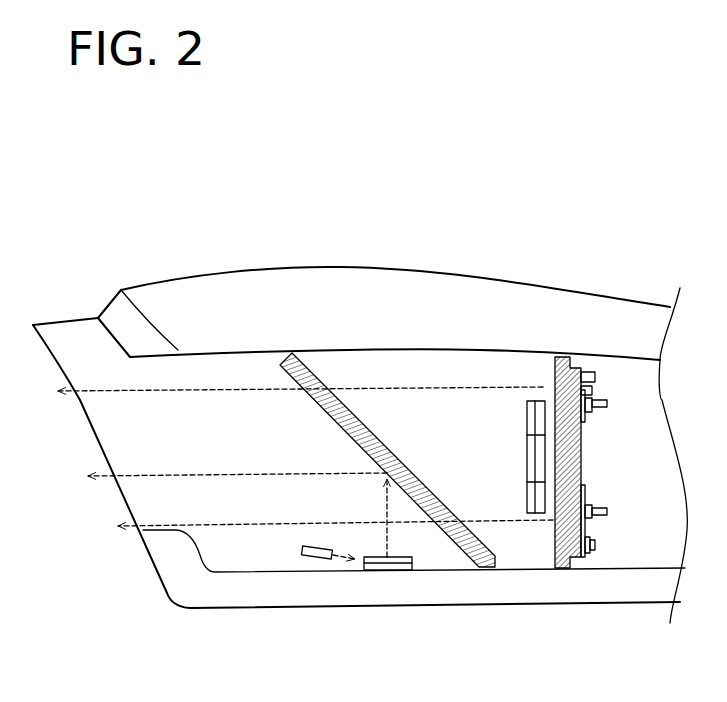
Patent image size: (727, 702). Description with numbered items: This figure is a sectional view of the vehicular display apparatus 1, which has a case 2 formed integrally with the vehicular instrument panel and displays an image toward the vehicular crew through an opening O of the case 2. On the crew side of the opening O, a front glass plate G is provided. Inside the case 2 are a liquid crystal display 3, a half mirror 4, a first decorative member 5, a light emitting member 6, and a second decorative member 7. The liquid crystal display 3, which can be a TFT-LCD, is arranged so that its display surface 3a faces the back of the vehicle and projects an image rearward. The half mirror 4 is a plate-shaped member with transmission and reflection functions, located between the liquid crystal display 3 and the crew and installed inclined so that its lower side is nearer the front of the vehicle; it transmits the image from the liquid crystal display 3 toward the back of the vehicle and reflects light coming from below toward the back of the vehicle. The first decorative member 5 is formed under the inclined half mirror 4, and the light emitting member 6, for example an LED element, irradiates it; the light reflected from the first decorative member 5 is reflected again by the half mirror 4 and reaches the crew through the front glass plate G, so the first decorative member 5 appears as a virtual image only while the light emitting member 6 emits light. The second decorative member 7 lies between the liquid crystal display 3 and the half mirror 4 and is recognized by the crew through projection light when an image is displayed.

The vehicular display apparatus 1 is at (577, 257).
The case 2 is at (430, 287).
The liquid crystal display 3 is at (577, 558).
The display surface 3a is at (555, 533).
The half mirror 4 is at (462, 554).
The first decorative member 5 is at (385, 571).
The light emitting member 6 is at (310, 559).
The second decorative member 7 is at (544, 514).
The opening O is at (130, 438).
The front glass plate G is at (125, 500).